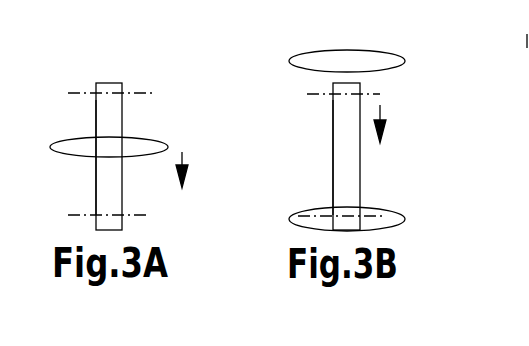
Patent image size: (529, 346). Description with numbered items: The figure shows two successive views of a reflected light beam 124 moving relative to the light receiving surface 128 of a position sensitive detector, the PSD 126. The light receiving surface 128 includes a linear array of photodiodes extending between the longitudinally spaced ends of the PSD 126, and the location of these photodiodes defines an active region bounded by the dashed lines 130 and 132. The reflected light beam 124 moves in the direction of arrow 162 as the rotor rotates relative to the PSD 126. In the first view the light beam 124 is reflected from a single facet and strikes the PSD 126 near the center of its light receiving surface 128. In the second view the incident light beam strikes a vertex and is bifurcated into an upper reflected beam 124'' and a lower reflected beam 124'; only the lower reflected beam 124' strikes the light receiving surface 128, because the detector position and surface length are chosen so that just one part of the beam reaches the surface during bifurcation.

In FIG. 3A, the reflected light beam 124 is at (124, 132).
In FIG. 3B, the lower reflected beam 124' is at (381, 208).
In FIG. 3B, the upper reflected beam 124'' is at (353, 40).
In FIG. 3A, the PSD 126 is at (96, 201).
In FIG. 3B, the PSD 126 is at (333, 124).
In FIG. 3A, the light receiving surface 128 is at (151, 156).
In FIG. 3B, the light receiving surface 128 is at (343, 182).
In FIG. 3A, the dashed line 130 is at (143, 92).
In FIG. 3B, the dashed line 130 is at (377, 92).
In FIG. 3A, the dashed line 132 is at (142, 216).
In FIG. 3B, the dashed line 132 is at (385, 218).
In FIG. 3A, the arrow 162 is at (187, 157).
In FIG. 3B, the arrow 162 is at (383, 112).